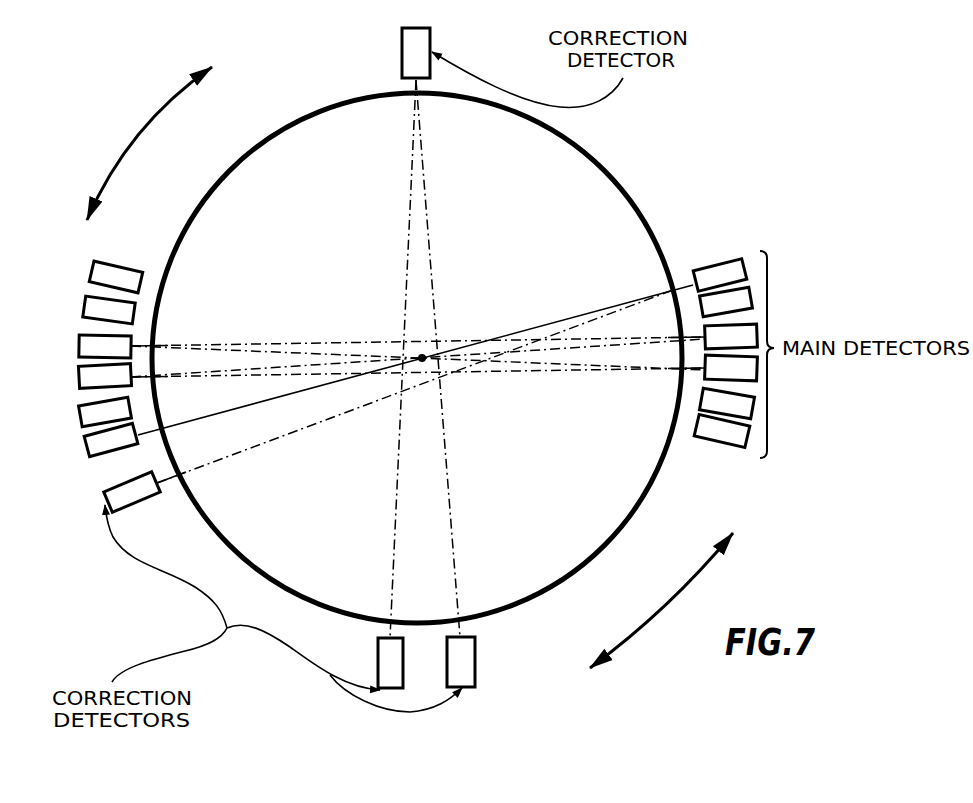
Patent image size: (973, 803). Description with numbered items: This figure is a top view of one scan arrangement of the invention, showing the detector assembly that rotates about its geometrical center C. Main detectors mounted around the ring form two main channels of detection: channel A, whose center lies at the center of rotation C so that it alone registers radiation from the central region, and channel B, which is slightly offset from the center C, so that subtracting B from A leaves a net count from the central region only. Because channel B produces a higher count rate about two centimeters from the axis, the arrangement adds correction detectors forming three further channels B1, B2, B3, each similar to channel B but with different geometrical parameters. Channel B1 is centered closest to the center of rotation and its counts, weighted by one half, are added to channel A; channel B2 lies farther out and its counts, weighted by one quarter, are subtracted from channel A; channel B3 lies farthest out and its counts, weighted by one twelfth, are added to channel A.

The detection channel A is at (388, 362).
The detection channel B is at (305, 373).
The correction channel B1 is at (403, 278).
The correction channel B2 is at (357, 412).
The correction channel B3 is at (430, 248).
The geometrical center C is at (422, 358).